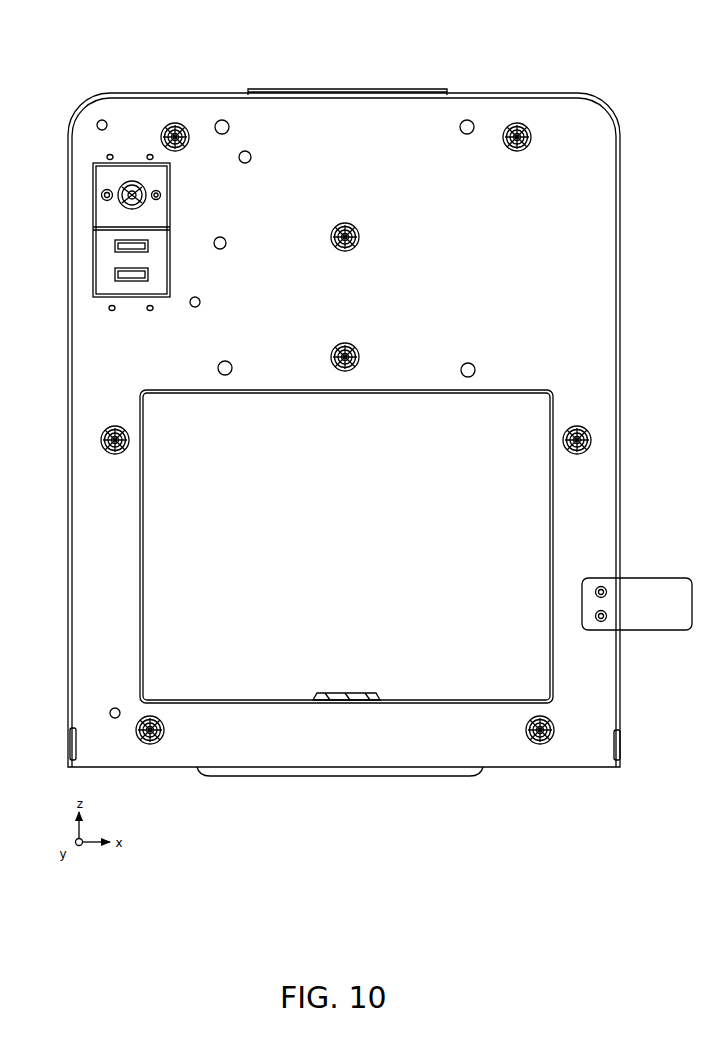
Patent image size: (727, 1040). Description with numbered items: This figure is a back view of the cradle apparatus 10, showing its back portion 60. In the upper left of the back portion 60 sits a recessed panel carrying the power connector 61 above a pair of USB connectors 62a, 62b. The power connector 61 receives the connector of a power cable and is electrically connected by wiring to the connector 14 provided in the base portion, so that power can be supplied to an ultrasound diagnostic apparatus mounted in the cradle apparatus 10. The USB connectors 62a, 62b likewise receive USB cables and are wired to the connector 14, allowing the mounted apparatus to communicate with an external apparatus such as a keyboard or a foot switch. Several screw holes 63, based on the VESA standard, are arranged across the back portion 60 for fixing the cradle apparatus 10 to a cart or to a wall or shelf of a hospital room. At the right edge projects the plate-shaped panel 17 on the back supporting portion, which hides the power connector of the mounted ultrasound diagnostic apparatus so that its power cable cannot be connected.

The cradle apparatus 10 is at (378, 60).
The connector 14 is at (344, 692).
The panel 17 is at (658, 578).
The back portion 60 is at (522, 215).
The power connector 61 is at (118, 190).
The USB connector 62a is at (118, 247).
The USB connector 62b is at (118, 278).
The screw hole 63 is at (222, 120).